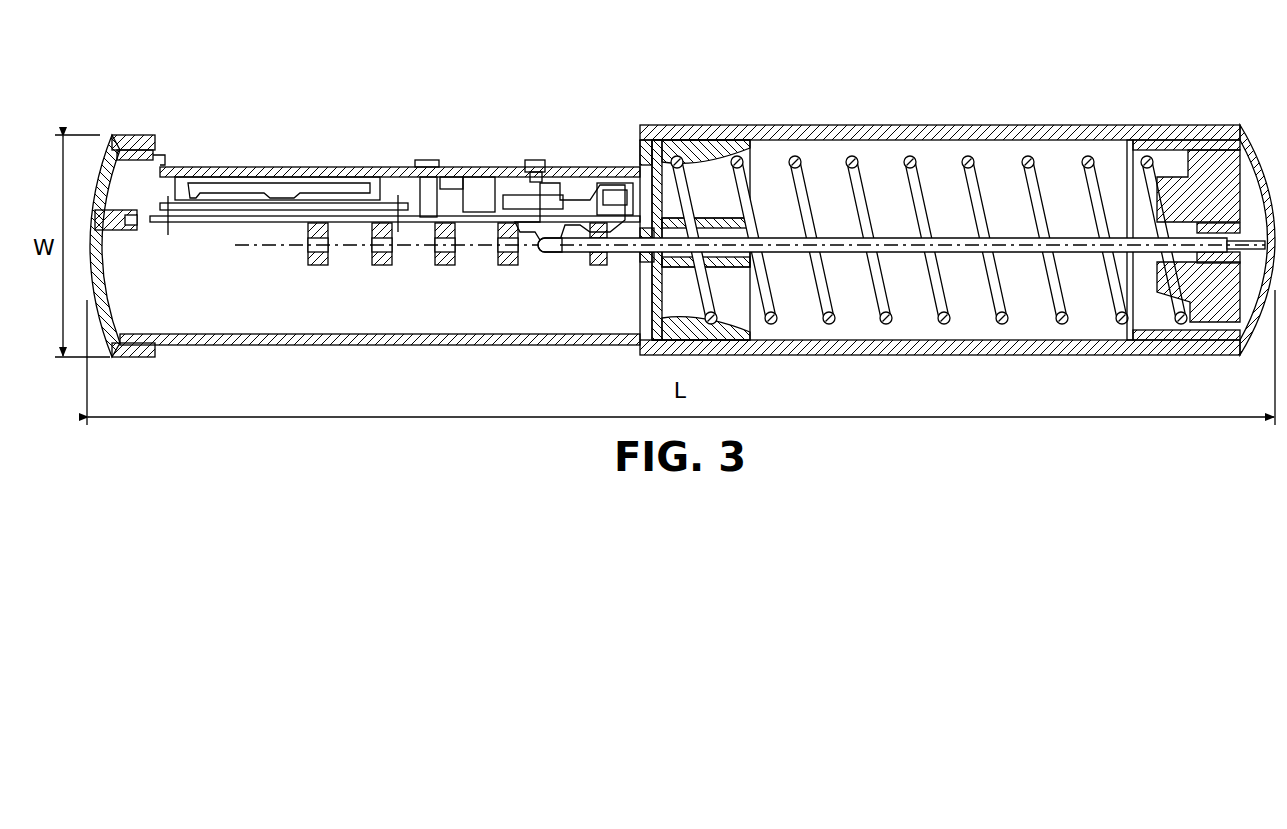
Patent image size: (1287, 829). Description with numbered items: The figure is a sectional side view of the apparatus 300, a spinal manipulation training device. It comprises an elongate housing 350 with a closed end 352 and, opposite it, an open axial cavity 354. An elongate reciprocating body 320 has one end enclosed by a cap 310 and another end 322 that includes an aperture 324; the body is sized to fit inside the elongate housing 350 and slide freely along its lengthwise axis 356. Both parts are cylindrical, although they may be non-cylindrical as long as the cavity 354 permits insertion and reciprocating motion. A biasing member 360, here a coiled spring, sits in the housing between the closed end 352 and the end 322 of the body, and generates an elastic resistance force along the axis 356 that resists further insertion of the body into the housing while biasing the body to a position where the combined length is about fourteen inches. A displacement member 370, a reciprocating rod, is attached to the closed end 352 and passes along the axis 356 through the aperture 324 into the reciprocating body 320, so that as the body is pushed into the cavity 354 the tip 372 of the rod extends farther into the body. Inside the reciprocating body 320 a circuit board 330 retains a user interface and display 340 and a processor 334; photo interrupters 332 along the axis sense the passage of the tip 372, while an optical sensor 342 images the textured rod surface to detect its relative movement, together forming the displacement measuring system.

The apparatus 300 is at (468, 62).
The cap 310 is at (139, 133).
The elongate reciprocating body 320 is at (356, 346).
The end 322 is at (697, 150).
The aperture 324 is at (700, 232).
The circuit board 330 is at (200, 222).
The photo interrupters 332 is at (503, 266).
The processor 334 is at (480, 175).
The user interface and display 340 is at (287, 190).
The optical sensor 342 is at (625, 190).
The elongate housing 350 is at (955, 125).
The closed end 352 is at (1255, 128).
The axial cavity 354 is at (640, 158).
The lengthwise axis 356 is at (270, 252).
The biasing member 360 is at (990, 210).
The displacement member 370 is at (775, 236).
The tip 372 is at (548, 256).